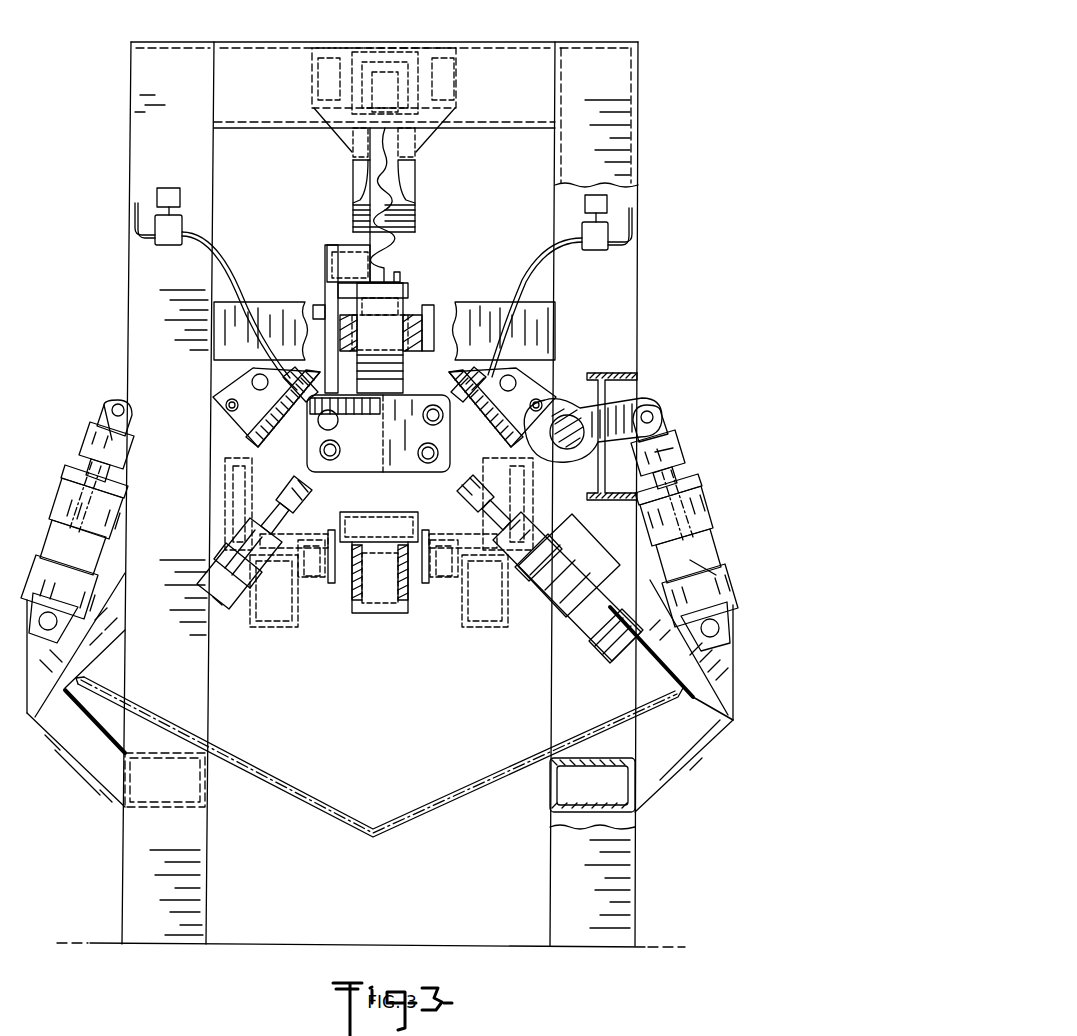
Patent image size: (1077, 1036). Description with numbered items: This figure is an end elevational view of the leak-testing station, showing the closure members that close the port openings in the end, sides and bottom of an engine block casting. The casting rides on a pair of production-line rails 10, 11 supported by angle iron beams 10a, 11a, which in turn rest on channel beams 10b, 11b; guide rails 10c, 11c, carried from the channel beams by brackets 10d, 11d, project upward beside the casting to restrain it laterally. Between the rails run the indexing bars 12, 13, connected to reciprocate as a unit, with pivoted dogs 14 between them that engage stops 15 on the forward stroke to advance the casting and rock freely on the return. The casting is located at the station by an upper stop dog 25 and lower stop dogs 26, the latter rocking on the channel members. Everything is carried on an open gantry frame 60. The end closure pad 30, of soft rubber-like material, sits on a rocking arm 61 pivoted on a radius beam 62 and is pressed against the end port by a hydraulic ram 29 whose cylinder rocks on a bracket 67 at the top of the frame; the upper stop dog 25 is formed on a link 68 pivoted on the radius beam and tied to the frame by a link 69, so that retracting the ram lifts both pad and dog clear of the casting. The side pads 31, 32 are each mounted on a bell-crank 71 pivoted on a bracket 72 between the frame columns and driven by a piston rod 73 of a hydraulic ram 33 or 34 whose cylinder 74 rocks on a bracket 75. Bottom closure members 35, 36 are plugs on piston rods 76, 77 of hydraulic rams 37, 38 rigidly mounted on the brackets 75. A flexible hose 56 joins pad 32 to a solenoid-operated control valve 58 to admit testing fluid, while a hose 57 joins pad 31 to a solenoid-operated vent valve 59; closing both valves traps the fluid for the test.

The rail 10 is at (442, 534).
The angle iron beam 10a is at (442, 576).
The channel beam 10b is at (462, 632).
The guide rail 10c is at (522, 478).
The bracket 10d is at (496, 632).
The rail 11 is at (318, 534).
The angle iron beam 11a is at (316, 576).
The channel beam 11b is at (290, 632).
The guide rail 11c is at (232, 470).
The bracket 11d is at (255, 632).
The indexing bar 12 is at (406, 608).
The indexing bar 13 is at (362, 605).
The dog 14 is at (378, 512).
The stop 15 is at (368, 615).
The upper stop dog 25 is at (290, 405).
The lower stop dog 26 is at (333, 584).
The hydraulic ram 29 is at (400, 175).
The end closure pad 30 is at (455, 385).
The pad 31 is at (455, 425).
The pad 32 is at (300, 430).
The hydraulic ram 33 is at (720, 546).
The hydraulic ram 34 is at (40, 528).
The bottom closure member 35 is at (466, 495).
The bottom closure member 36 is at (308, 496).
The hydraulic ram 37 is at (578, 630).
The hydraulic ram 38 is at (213, 600).
The flexible hose 56 is at (215, 262).
The flexible hose 57 is at (525, 260).
The solenoid operated control valve 58 is at (180, 228).
The solenoid operated vent valve 59 is at (600, 250).
The frame 60 is at (113, 346).
The rocking arm 61 is at (403, 300).
The radius beam 62 is at (418, 330).
The bracket 67 is at (464, 50).
The link 68 is at (316, 304).
The link 69 is at (325, 265).
The bell-crank 71 is at (560, 400).
The bracket 72 is at (618, 375).
The piston rod 73 is at (675, 470).
The cylinder 74 is at (708, 565).
The bracket 75 is at (725, 670).
The piston rod 76 is at (548, 540).
The piston rod 77 is at (262, 510).